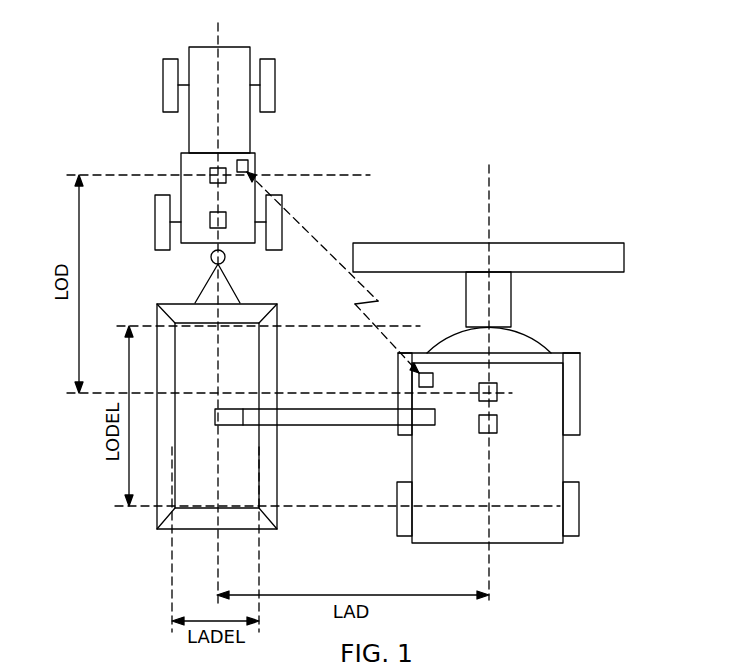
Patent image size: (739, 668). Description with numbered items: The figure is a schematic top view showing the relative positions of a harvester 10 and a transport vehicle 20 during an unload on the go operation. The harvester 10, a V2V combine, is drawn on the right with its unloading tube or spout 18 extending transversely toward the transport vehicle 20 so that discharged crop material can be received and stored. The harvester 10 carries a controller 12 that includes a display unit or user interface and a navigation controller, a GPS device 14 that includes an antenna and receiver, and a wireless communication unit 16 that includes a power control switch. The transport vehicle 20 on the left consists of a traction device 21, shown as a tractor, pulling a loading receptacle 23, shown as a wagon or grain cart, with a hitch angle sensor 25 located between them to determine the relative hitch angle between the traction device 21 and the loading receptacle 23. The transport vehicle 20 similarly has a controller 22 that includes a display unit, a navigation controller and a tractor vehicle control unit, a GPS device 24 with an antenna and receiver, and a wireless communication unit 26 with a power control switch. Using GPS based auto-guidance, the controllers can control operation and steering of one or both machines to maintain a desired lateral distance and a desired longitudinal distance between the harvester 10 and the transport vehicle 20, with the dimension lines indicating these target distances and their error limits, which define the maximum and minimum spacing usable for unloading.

The harvester 10 is at (626, 511).
The controller 12 is at (497, 424).
The GPS device 14 is at (497, 390).
The wireless communication unit 16 is at (418, 378).
The unloading tube or spout 18 is at (324, 428).
The transport vehicle 20 is at (104, 574).
The traction device 21 is at (232, 108).
The controller 22 is at (210, 218).
The loading receptacle 23 is at (266, 507).
The GPS device 24 is at (210, 174).
The hitch angle sensor 25 is at (211, 259).
The wireless communication unit 26 is at (249, 163).